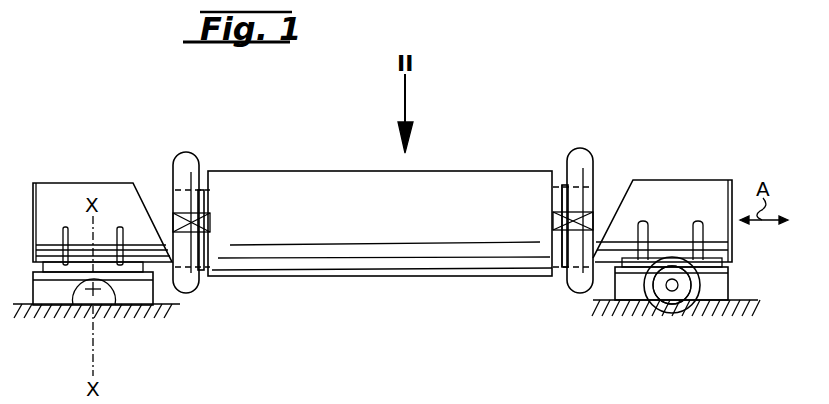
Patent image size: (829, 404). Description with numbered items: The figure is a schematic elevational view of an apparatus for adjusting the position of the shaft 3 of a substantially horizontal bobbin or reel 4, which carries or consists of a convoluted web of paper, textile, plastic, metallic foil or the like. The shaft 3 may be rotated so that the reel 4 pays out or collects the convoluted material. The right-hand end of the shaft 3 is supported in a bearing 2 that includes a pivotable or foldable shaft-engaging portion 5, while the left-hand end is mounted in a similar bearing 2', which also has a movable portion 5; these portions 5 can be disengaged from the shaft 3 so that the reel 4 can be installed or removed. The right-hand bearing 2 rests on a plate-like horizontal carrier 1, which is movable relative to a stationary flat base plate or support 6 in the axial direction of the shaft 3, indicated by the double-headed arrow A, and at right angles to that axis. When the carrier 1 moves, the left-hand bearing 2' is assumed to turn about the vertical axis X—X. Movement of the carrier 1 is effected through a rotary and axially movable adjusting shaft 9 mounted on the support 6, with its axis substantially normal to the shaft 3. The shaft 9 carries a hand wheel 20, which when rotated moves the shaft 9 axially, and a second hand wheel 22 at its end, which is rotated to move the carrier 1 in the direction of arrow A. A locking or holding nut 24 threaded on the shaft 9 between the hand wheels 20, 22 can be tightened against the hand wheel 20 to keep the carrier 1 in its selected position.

The carrier 1 is at (623, 294).
The bearing 2 is at (662, 177).
The bearing 2' is at (102, 196).
The shaft 3 is at (563, 185).
The reel 4 is at (390, 256).
The shaft-engaging portion 5 is at (173, 193).
The support 6 is at (640, 295).
The adjusting shaft 9 is at (672, 291).
The hand wheel 20 is at (662, 313).
The second hand wheel 22 is at (681, 294).
The locking nut 24 is at (681, 294).